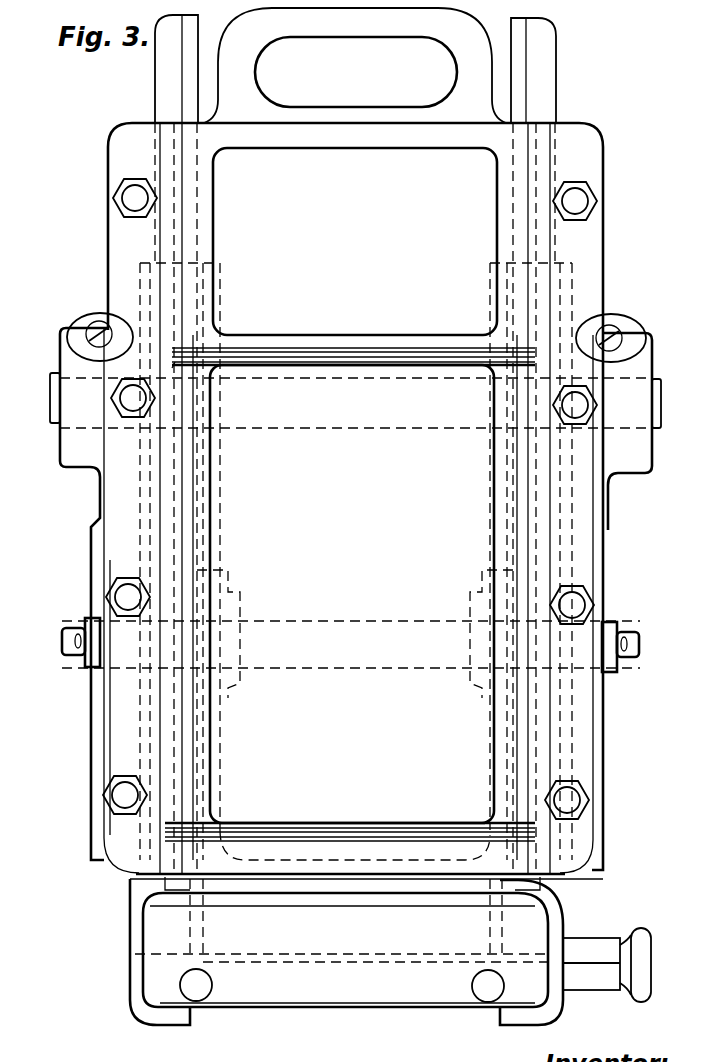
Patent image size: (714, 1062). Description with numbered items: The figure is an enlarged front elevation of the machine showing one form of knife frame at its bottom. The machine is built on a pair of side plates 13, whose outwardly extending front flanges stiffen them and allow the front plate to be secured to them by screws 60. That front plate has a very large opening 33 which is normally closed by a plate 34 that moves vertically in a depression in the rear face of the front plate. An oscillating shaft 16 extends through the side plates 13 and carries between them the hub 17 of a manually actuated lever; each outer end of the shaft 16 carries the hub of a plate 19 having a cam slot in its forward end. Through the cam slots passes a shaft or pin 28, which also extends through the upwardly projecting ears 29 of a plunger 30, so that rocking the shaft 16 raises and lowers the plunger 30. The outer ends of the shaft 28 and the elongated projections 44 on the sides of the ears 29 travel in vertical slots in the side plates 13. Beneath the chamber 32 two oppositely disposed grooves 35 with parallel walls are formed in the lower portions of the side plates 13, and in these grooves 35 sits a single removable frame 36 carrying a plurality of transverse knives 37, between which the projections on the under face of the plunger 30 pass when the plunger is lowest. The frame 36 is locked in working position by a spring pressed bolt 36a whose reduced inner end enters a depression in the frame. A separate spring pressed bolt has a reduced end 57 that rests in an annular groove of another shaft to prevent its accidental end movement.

The side plates 13 is at (199, 30).
The reduced end of spring pressed bolt 57 is at (162, 72).
The plate 34 is at (355, 118).
The chamber 32 is at (612, 164).
The screws 60 is at (116, 205).
The hub 17 is at (660, 356).
The oscillating shaft 16 is at (52, 405).
The plate 19 is at (90, 836).
The elongated projections 44 is at (90, 723).
The shaft or pin 28 is at (62, 644).
The ears 29 is at (228, 720).
The plunger 30 is at (348, 852).
The opening 33 is at (360, 355).
The grooves 35 is at (142, 990).
The removable frame 36 is at (150, 950).
The spring pressed bolt 36a is at (594, 936).
The knives 37 is at (258, 944).